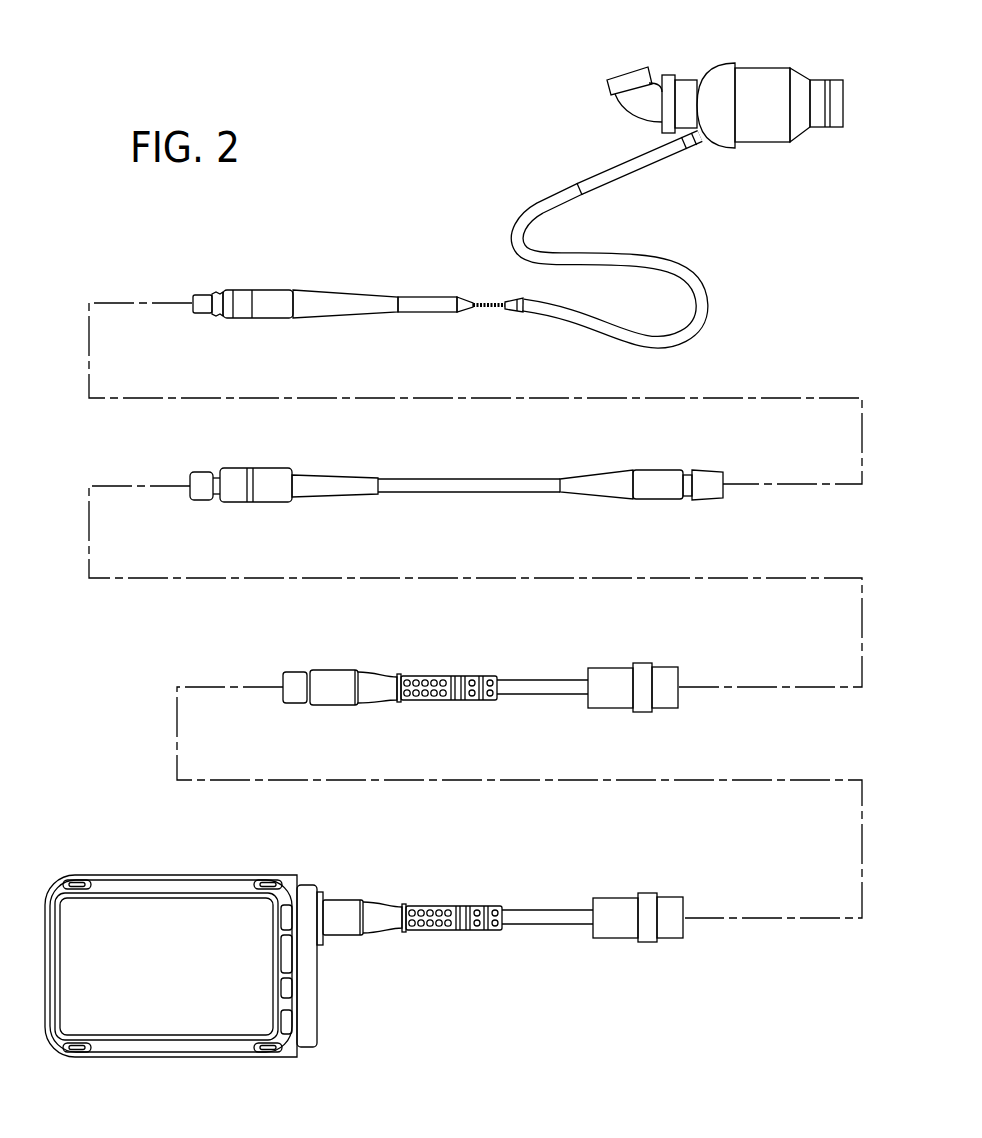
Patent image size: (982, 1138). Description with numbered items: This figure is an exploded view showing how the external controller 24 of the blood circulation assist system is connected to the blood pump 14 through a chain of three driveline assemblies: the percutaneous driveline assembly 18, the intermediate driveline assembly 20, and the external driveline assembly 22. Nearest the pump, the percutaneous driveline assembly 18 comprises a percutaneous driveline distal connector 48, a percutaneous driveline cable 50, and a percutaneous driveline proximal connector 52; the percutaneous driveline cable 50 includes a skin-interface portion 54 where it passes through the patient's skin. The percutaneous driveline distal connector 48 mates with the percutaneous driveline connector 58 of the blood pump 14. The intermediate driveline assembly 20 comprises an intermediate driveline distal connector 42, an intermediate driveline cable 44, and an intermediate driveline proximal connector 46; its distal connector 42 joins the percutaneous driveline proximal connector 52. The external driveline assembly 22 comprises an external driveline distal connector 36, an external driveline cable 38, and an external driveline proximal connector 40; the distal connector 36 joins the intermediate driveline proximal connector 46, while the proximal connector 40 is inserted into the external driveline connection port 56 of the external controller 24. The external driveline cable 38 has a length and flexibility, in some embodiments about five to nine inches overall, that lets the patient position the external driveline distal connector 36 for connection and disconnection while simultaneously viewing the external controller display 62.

The blood pump 14 is at (752, 67).
The percutaneous driveline assembly 18 is at (408, 232).
The intermediate driveline assembly 20 is at (425, 460).
The external driveline assembly 22 is at (485, 650).
The external controller 24 is at (183, 876).
The external driveline distal connector 36 is at (650, 665).
The external driveline cable 38 is at (540, 680).
The external driveline proximal connector 40 is at (340, 677).
The intermediate driveline distal connector 42 is at (672, 470).
The intermediate driveline cable 44 is at (520, 479).
The intermediate driveline proximal connector 46 is at (272, 468).
The percutaneous driveline distal connector 48 is at (635, 170).
The percutaneous driveline cable 50 is at (420, 297).
The percutaneous driveline proximal connector 52 is at (272, 291).
The skin-interface portion 54 is at (485, 272).
The external driveline connection port 56 is at (325, 895).
The percutaneous driveline connector 58 is at (697, 150).
The external controller display 62 is at (164, 957).